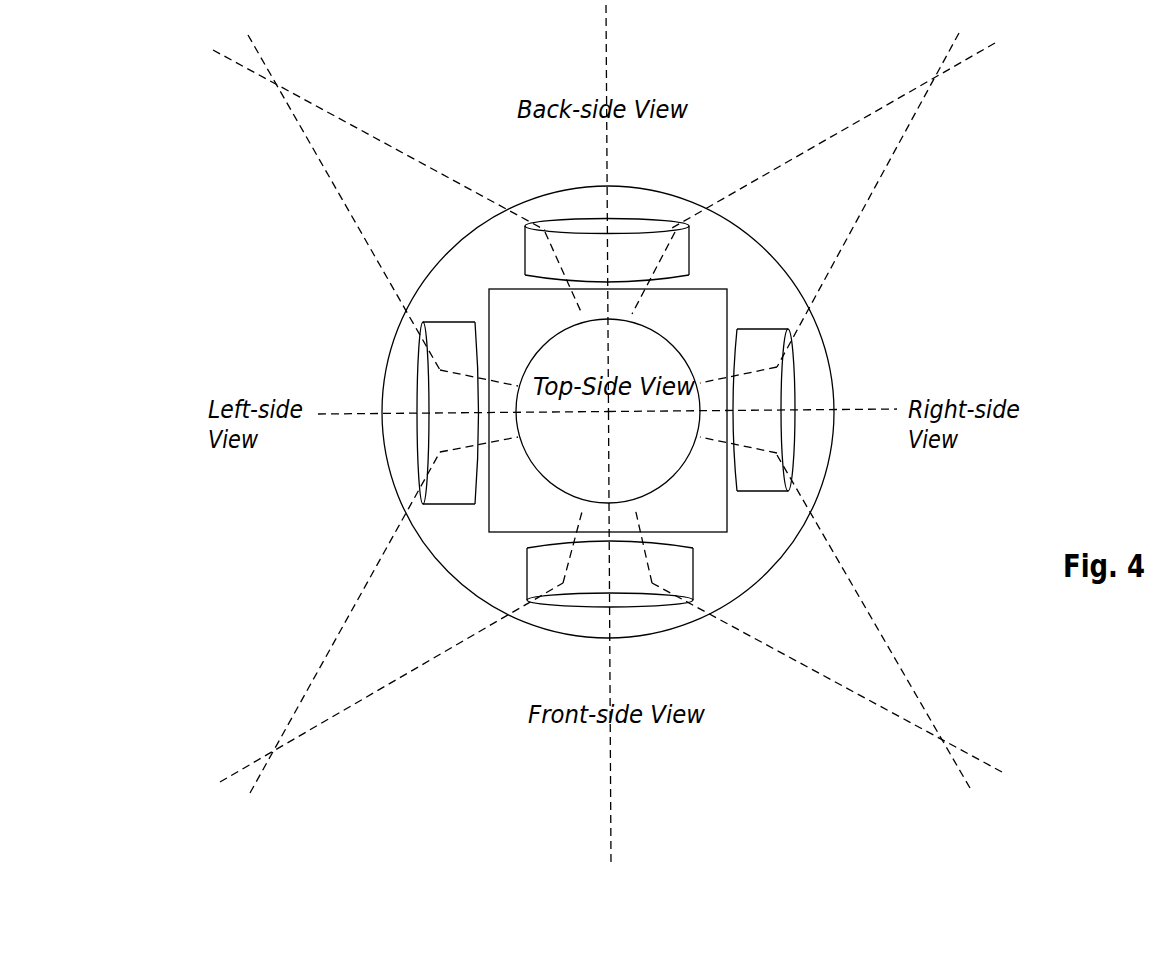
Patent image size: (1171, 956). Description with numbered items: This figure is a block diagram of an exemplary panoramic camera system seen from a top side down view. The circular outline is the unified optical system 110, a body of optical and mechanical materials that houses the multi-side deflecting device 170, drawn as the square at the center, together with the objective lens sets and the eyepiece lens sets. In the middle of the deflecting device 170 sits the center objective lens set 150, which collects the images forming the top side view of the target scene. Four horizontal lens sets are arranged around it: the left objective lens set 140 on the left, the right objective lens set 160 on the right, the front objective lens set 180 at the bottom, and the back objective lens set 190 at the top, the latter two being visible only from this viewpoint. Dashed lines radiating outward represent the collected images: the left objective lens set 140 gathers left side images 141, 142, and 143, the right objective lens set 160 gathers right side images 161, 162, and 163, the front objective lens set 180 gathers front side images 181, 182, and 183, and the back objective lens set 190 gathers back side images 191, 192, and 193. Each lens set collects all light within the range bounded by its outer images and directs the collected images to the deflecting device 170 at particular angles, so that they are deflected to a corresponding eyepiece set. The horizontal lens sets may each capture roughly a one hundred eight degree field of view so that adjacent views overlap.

The unified optical system 110 is at (454, 246).
The left objective lens set 140 is at (414, 434).
The left side image 141 is at (348, 614).
The left side image 142 is at (341, 404).
The left side image 143 is at (336, 188).
The center objective lens set 150 is at (673, 348).
The right objective lens set 160 is at (800, 378).
The right side image 161 is at (867, 610).
The right side image 162 is at (890, 418).
The right side image 163 is at (864, 208).
The multi-side deflecting device 170 is at (727, 514).
The front objective lens set 180 is at (520, 575).
The front side image 181 is at (397, 684).
The front side image 182 is at (604, 794).
The front side image 183 is at (866, 700).
The back objective lens set 190 is at (645, 221).
The back side image 191 is at (392, 146).
The back side image 192 is at (600, 40).
The back side image 193 is at (822, 140).